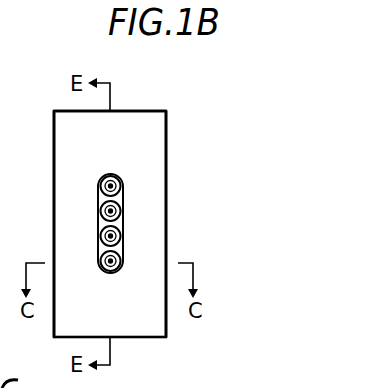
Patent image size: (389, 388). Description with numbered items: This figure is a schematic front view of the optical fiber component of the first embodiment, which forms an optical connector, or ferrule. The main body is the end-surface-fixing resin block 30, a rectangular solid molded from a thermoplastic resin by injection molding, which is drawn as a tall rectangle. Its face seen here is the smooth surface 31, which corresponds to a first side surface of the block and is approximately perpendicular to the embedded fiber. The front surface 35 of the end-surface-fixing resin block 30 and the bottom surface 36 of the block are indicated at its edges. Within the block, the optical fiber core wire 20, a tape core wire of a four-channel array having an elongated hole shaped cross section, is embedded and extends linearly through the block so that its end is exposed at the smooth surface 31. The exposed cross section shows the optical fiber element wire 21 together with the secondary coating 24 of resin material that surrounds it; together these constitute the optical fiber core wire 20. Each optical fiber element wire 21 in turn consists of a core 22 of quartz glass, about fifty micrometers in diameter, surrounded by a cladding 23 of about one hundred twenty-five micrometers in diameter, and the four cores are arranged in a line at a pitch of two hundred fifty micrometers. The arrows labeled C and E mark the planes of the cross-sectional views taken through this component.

The optical fiber core wire 20 is at (278, 251).
The optical fiber element wire 21 is at (215, 196).
The core 22 is at (123, 235).
The cladding 23 is at (123, 210).
The secondary coating 24 is at (123, 185).
The end-surface-fixing resin block 30 is at (152, 145).
The smooth surface 31 is at (150, 128).
The front surface 35 is at (54, 174).
The bottom surface 36 is at (168, 128).